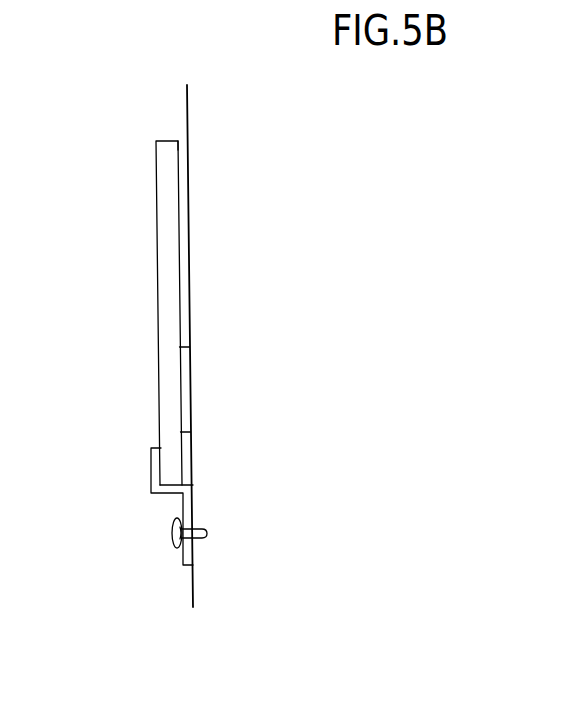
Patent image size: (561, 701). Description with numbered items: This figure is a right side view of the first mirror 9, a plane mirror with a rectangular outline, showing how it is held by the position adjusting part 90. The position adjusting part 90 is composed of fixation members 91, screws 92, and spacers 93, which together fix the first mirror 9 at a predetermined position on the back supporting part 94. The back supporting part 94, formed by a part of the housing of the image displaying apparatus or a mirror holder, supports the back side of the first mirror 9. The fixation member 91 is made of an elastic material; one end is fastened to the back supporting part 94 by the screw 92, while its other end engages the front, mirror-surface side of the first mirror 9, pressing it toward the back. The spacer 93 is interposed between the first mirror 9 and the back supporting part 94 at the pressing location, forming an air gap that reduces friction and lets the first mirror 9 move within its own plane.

The first mirror 9 is at (156, 221).
The position adjusting part 90 is at (275, 497).
The fixation member 91 is at (151, 466).
The screw 92 is at (173, 541).
The spacer 93 is at (191, 402).
The back supporting part 94 is at (187, 193).